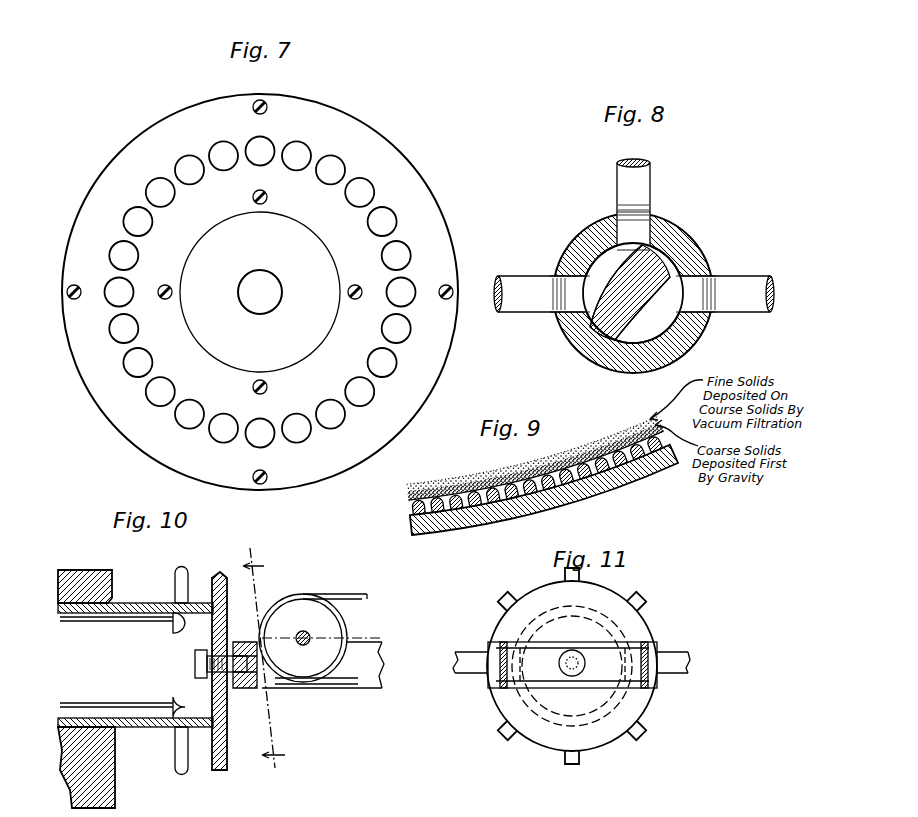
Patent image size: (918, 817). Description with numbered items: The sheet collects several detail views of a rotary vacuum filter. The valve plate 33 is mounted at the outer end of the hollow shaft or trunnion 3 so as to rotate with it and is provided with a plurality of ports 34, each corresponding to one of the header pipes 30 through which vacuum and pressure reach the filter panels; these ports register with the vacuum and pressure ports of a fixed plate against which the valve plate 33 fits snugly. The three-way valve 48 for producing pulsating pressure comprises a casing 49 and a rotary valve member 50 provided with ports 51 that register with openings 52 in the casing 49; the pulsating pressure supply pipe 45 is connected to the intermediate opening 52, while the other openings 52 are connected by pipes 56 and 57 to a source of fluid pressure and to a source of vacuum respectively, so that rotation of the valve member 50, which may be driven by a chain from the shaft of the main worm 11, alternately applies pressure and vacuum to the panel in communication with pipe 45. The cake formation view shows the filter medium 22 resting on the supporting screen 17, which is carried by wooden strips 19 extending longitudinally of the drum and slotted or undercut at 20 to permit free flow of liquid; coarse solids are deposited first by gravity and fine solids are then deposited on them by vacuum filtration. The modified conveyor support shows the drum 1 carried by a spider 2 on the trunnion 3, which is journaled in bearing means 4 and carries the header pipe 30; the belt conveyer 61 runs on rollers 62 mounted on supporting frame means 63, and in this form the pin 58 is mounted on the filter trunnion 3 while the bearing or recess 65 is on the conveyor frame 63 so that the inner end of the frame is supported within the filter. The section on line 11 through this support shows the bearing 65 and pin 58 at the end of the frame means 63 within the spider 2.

In FIG. 9, the rotary drum 1 is at (478, 517).
In FIG. 10, the spider 2 is at (219, 572).
In FIG. 11, the spider 2 is at (645, 594).
In FIG. 10, the hollow shaft or trunnion 3 is at (140, 603).
In FIG. 10, the bearing means 4 is at (60, 590).
In FIG. 10, the worm 11 is at (264, 662).
In FIG. 9, the supporting screen 17 is at (425, 504).
In FIG. 9, the wooden strips 19 is at (466, 505).
In FIG. 9, the slot or undercut 20 is at (526, 499).
In FIG. 9, the filter medium 22 is at (418, 496).
In FIG. 10, the header pipe 30 is at (115, 710).
In FIG. 7, the valve plate 33 is at (112, 175).
In FIG. 7, the ports 34 is at (401, 247).
In FIG. 8, the pulsating pressure supply pipe 45 is at (640, 188).
In FIG. 8, the three-way valve 48 is at (588, 224).
In FIG. 8, the casing 49 is at (684, 242).
In FIG. 8, the rotary valve member 50 is at (598, 318).
In FIG. 8, the ports 51 is at (630, 292).
In FIG. 8, the openings 52 is at (643, 233).
In FIG. 8, the pipe 56 is at (535, 286).
In FIG. 8, the pipe 57 is at (748, 283).
In FIG. 10, the pin 58 is at (200, 672).
In FIG. 11, the pin 58 is at (586, 660).
In FIG. 10, the belt conveyer 61 is at (326, 594).
In FIG. 10, the rollers 62 is at (342, 616).
In FIG. 10, the supporting frame means 63 is at (368, 688).
In FIG. 11, the supporting frame means 63 is at (654, 687).
In FIG. 10, the bearing or recess 65 is at (240, 690).
In FIG. 11, the bearing or recess 65 is at (560, 668).